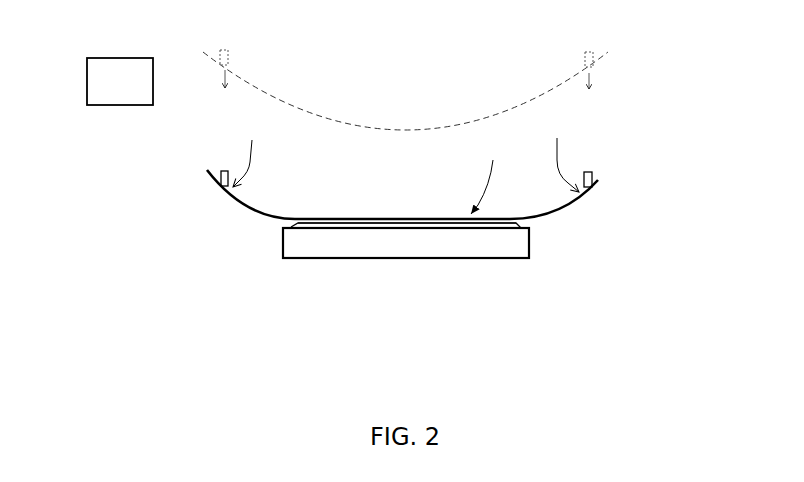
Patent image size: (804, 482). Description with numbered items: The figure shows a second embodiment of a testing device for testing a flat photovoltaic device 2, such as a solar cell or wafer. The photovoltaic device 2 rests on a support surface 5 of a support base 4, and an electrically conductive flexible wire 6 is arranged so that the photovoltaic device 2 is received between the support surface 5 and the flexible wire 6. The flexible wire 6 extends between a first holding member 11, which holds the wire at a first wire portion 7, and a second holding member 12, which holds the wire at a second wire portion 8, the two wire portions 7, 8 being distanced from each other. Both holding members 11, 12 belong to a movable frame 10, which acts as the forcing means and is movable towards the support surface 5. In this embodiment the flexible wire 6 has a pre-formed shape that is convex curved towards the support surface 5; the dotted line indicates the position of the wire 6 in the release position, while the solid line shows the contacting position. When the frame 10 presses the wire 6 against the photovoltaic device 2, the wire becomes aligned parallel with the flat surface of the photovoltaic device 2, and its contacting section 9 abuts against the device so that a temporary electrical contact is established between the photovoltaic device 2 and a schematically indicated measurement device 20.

The photovoltaic device 2 is at (441, 224).
The support base 4 is at (337, 242).
The support surface 5 is at (398, 229).
The flexible wire 6 is at (405, 129).
The first wire portion 7 is at (245, 153).
The second wire portion 8 is at (566, 151).
The contacting section 9 is at (488, 175).
The frame 10 is at (224, 170).
The first holding member 11 is at (217, 62).
The second holding member 12 is at (594, 62).
The measurement device 20 is at (181, 137).